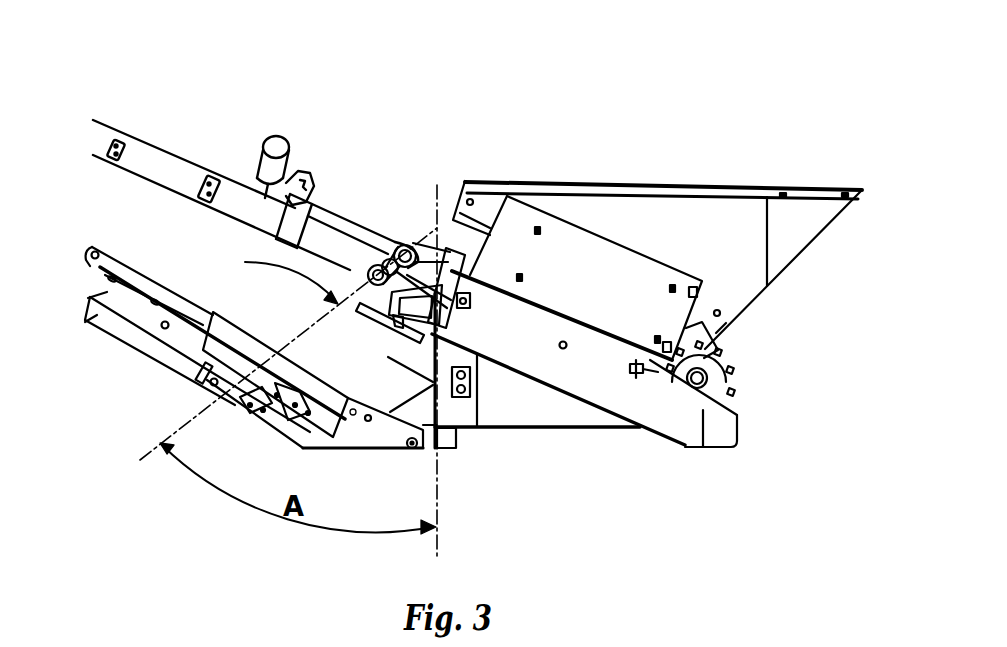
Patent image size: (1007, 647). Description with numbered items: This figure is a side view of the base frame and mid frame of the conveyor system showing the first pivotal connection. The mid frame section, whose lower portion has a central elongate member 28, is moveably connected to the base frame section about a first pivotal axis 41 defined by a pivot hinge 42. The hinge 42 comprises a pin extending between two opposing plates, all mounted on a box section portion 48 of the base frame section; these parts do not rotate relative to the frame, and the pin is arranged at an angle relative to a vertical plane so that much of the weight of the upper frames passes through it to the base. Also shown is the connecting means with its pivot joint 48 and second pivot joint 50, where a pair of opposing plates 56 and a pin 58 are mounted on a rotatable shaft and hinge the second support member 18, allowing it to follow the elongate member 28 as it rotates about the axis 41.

The second support member 18 is at (92, 318).
The central elongate member 28 is at (140, 139).
The first pivotal axis 41 is at (275, 271).
The pivot hinge 42 is at (394, 250).
The box section portion / first pivot joint 48 is at (425, 448).
The second pivot joint 50 is at (363, 457).
The opposing plates 56 is at (363, 406).
The pin 58 is at (350, 399).